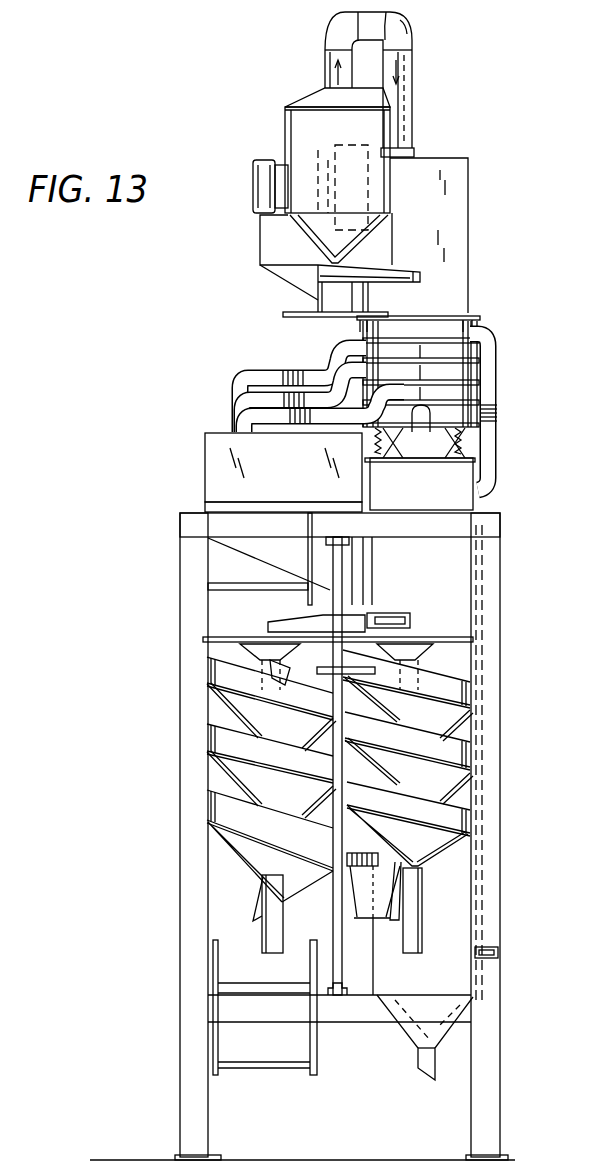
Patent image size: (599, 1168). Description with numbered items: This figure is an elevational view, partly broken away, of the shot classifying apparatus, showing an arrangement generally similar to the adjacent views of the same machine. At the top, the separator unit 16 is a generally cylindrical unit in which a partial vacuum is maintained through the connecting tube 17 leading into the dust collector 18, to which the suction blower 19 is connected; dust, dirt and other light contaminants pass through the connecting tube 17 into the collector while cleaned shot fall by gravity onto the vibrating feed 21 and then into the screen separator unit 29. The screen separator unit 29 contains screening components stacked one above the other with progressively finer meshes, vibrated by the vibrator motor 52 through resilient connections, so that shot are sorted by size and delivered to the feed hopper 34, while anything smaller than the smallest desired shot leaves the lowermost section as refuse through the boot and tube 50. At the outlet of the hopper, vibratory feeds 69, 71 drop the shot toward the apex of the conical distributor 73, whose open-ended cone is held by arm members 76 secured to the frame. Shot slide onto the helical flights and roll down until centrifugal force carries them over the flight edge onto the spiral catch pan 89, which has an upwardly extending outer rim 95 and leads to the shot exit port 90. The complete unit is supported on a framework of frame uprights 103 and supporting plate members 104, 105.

The separator unit 16 is at (300, 130).
The connecting tube 17 is at (370, 40).
The dust collector 18 is at (455, 197).
The suction blower 19 is at (262, 185).
The vibrating feed 21 is at (391, 271).
The screen separator unit 29 is at (352, 336).
The feed hopper 34 is at (215, 472).
The vibrator motor 52 is at (462, 500).
The supporting plate member 105 is at (232, 530).
The conical distributor 73 is at (262, 645).
The vibratory feed 69 is at (290, 622).
The arm members 76 is at (222, 640).
The vibratory feed 71 is at (397, 621).
The catch pan 89 is at (232, 705).
The outer rim 95 is at (212, 745).
The frame uprights 103 is at (192, 900).
The shot exit port 90 is at (364, 916).
The boot and tube 50 is at (500, 950).
The supporting plate member 104 is at (368, 1010).